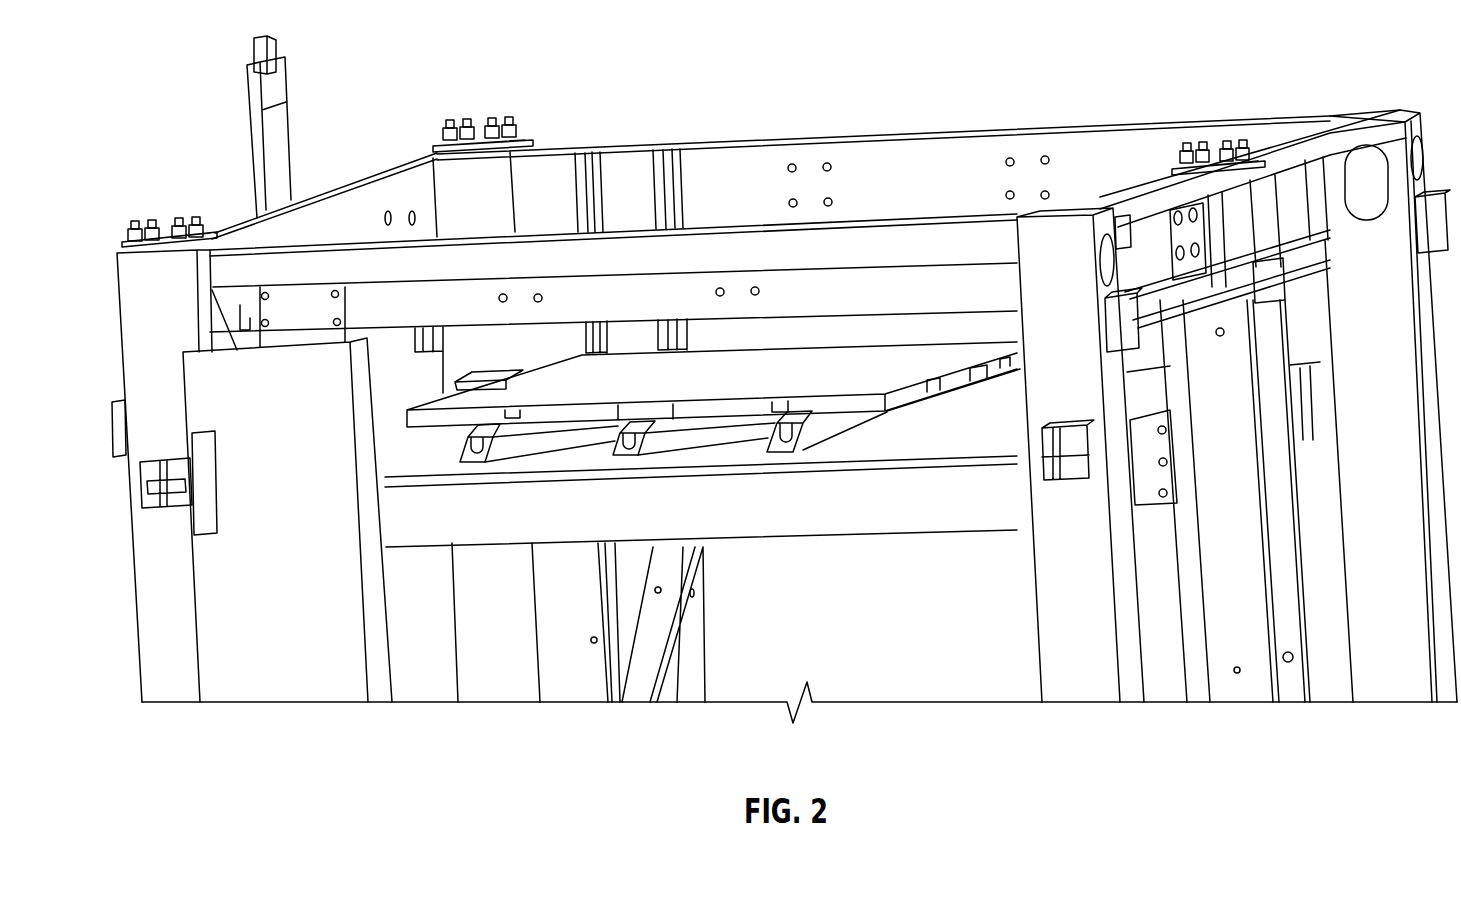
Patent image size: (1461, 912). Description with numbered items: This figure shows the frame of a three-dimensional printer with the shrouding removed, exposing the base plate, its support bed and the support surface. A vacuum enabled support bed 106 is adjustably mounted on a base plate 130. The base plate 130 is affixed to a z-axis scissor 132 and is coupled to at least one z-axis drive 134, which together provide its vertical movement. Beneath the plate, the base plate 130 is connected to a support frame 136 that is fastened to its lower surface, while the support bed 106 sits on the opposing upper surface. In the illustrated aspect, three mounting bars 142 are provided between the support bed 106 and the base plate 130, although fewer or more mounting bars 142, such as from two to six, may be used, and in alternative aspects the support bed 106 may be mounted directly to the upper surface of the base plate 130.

The support bed 106 is at (877, 357).
The base plate 130 is at (963, 440).
The z-axis scissor 132 is at (657, 622).
The z-axis drive 134 is at (1245, 585).
The support frame 136 is at (863, 517).
The mounting bars 142 is at (470, 462).